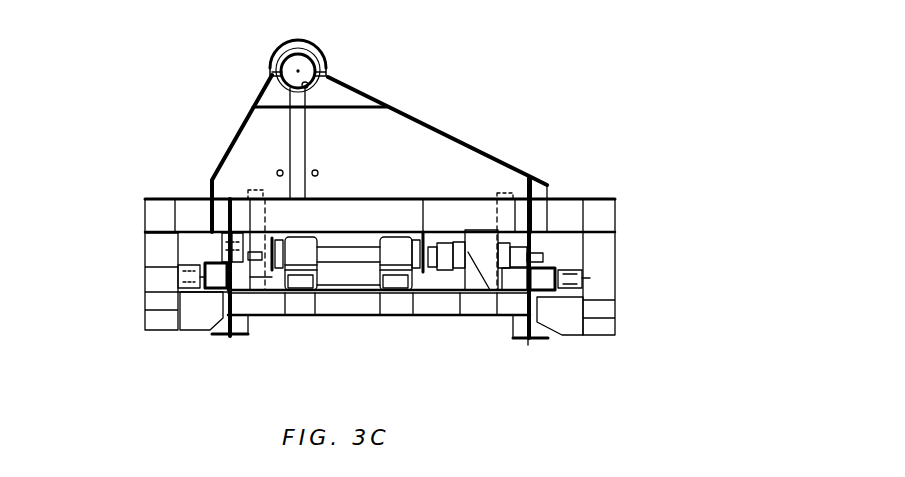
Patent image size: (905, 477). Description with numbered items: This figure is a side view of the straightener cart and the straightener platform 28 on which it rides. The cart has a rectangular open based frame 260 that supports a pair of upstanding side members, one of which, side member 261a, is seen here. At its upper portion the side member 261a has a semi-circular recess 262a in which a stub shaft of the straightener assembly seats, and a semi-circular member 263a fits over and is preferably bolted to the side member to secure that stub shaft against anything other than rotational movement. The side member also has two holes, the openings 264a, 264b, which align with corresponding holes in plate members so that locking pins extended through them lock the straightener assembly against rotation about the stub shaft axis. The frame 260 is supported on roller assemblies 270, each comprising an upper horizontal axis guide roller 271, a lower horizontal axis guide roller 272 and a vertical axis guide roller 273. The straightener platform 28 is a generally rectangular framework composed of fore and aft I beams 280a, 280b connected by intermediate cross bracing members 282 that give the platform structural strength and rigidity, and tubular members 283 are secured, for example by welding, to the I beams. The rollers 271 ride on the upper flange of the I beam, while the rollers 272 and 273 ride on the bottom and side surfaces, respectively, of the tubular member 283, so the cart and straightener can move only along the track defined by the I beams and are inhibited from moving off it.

The rectangular open based frame 260 is at (178, 190).
The upstanding side member 261a is at (450, 150).
The semi-circular recess 262a is at (309, 85).
The semi-circular member 263a is at (317, 50).
The opening 264a is at (318, 171).
The opening 264b is at (280, 170).
The roller assembly 270 is at (197, 250).
The upper horizontal axis guide roller 271 is at (220, 245).
The lower horizontal axis guide roller 272 is at (197, 327).
The vertical axis guide roller 273 is at (150, 270).
The tubular member 283 is at (205, 260).
The intermediate cross bracing member 282 is at (432, 317).
The fore I beam 280a is at (524, 343).
The aft I beam 280b is at (228, 340).
The straightener platform 28 is at (290, 321).